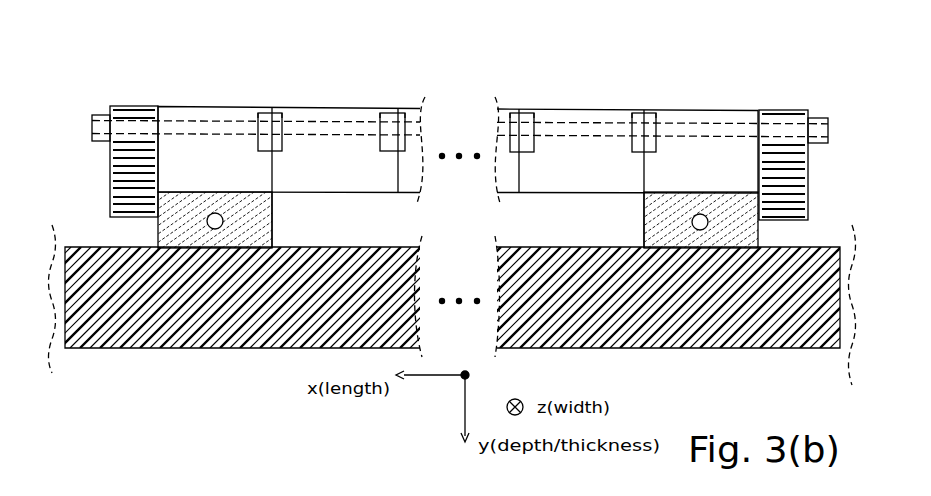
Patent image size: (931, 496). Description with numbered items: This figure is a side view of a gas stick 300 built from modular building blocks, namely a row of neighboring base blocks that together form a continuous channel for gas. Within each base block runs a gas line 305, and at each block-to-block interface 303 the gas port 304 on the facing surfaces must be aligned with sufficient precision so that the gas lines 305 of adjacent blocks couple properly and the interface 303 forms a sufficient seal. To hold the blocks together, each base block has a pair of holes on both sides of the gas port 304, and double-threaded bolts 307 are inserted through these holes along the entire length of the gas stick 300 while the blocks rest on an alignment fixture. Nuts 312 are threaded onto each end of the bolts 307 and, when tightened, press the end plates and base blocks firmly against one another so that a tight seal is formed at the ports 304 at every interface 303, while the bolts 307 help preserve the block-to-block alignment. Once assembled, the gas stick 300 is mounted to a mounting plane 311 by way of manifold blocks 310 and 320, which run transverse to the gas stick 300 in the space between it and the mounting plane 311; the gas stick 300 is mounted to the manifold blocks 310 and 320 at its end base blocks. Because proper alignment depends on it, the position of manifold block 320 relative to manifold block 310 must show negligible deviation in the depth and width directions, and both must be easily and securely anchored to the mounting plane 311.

The gas stick 300 is at (163, 77).
The interface 303 is at (272, 98).
The gas port 304 is at (259, 113).
The gas line 305 is at (228, 127).
The bolt 307 is at (140, 128).
The manifold block 310 is at (273, 220).
The mounting plane 311 is at (254, 318).
The nut 312 is at (92, 124).
The manifold block 320 is at (644, 224).